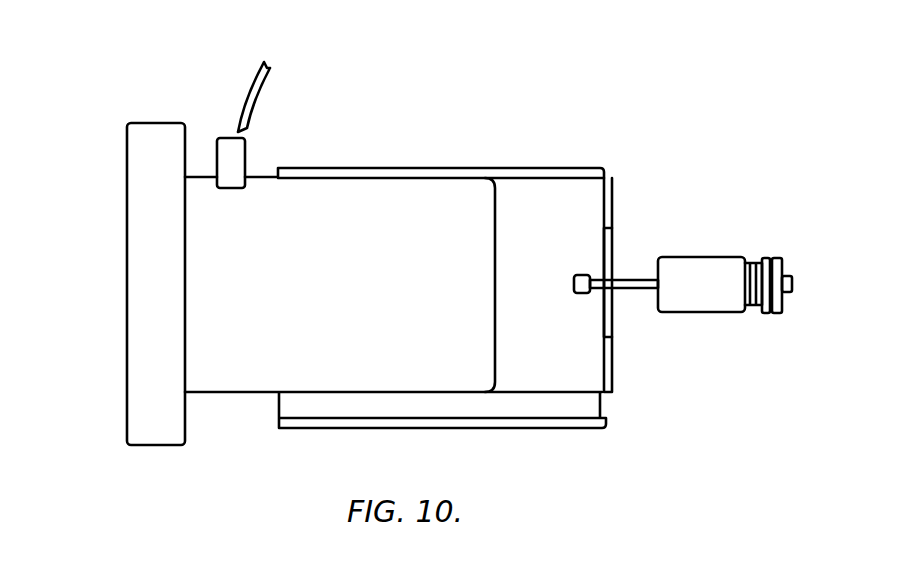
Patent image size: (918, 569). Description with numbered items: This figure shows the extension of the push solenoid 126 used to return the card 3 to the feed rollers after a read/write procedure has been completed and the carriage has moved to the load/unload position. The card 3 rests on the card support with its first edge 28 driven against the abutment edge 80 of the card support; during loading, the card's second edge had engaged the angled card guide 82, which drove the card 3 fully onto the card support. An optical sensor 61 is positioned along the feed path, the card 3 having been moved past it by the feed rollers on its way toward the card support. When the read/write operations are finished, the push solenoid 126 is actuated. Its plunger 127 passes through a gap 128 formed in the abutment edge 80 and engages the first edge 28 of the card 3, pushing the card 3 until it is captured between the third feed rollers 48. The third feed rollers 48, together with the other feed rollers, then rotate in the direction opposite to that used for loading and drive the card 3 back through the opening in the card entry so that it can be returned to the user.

The card 3 is at (218, 398).
The first edge 28 is at (500, 232).
The third feed rollers 48 is at (140, 292).
The optical sensor 61 is at (228, 137).
The abutment edge 80 is at (613, 192).
The angled card guide 82 is at (275, 73).
The push solenoid 126 is at (735, 262).
The plunger 127 is at (632, 290).
The gap 128 is at (613, 245).